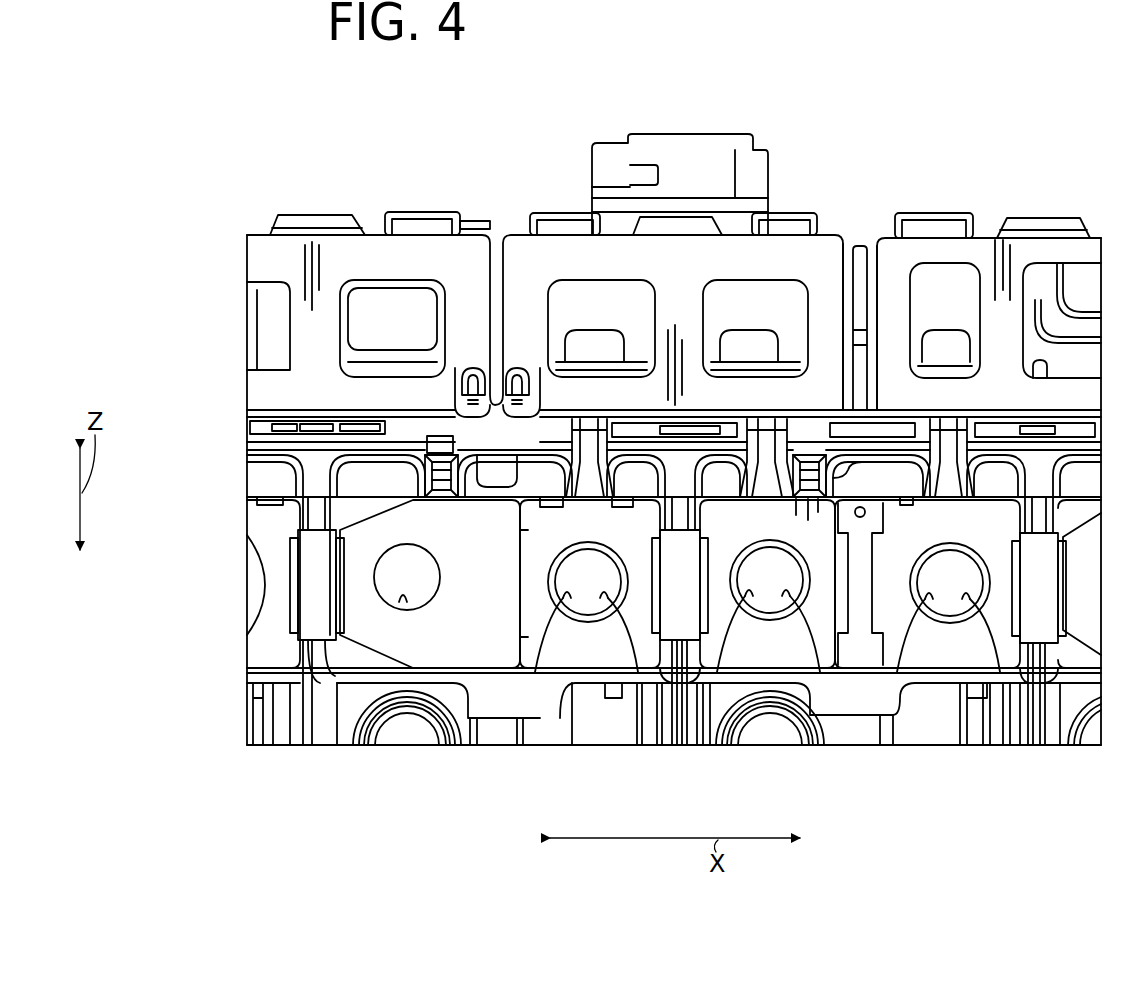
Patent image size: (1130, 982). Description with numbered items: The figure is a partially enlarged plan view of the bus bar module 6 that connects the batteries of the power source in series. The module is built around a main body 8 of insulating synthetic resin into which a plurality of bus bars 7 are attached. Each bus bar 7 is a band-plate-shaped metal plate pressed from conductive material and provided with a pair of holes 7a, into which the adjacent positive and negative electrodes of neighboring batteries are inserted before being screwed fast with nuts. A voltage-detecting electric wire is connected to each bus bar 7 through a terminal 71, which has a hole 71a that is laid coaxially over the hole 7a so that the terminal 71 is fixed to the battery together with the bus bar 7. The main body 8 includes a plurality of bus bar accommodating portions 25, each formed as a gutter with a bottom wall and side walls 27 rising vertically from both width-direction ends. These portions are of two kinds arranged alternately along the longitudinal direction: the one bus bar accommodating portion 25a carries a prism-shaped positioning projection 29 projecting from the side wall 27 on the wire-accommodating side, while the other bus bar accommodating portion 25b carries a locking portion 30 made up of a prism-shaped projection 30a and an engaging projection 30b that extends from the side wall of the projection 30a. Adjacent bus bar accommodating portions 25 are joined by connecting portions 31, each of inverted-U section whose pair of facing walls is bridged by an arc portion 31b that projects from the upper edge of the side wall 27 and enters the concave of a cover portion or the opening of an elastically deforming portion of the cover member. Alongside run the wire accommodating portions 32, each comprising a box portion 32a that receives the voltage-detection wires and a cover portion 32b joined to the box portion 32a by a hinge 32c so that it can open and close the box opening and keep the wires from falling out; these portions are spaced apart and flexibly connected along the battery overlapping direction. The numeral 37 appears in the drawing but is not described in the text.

The bus bar module 6 is at (860, 206).
The bus bar 7 is at (495, 640).
The hole 7a is at (407, 602).
The main body 8 is at (883, 233).
The bus bar accommodating portion 25 is at (674, 752).
The one bus bar accommodating portion 25a is at (913, 688).
The other bus bar accommodating portion 25b is at (552, 690).
The side wall 27 is at (370, 492).
The positioning projection 29 is at (792, 480).
The locking portion 30 is at (178, 392).
The projection 30a is at (435, 473).
The engaging projection 30b is at (440, 444).
The connecting portion 31 is at (293, 620).
The arc portion 31b is at (317, 555).
The wire accommodating portion 32 is at (420, 238).
The box portion 32a is at (440, 298).
The cover portion 32b is at (377, 250).
The hinge 32c is at (306, 226).
The connecting portion 37 is at (833, 482).
The terminal 71 is at (603, 657).
The hole 71a is at (630, 650).